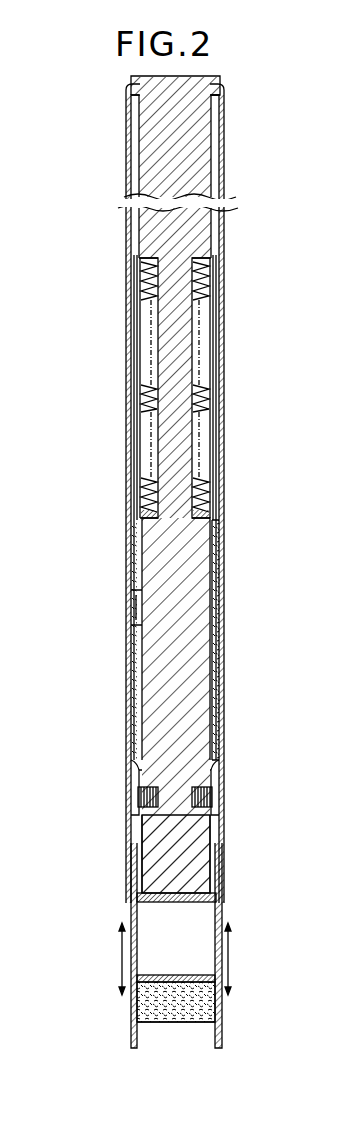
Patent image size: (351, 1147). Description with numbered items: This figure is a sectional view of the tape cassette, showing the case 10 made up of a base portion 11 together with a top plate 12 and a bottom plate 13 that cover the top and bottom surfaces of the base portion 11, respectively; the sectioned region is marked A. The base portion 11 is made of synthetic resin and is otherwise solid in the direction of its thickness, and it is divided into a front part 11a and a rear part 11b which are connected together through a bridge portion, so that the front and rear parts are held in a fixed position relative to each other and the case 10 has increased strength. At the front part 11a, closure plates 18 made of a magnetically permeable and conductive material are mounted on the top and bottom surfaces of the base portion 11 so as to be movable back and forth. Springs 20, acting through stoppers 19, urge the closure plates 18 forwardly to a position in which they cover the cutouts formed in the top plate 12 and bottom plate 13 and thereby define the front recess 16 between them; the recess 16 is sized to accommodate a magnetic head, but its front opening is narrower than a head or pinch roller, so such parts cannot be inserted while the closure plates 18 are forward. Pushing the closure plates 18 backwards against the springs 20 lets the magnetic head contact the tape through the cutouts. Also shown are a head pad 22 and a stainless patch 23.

The case 10 is at (122, 240).
The section A is at (228, 245).
The base portion 11 is at (184, 575).
The front part 11a is at (152, 856).
The rear part 11b is at (188, 156).
The top plate 12 is at (222, 291).
The bottom plate 13 is at (128, 603).
The front recess 16 is at (172, 938).
The closure plates 18 is at (221, 670).
The stoppers 19 is at (128, 437).
The springs 20 is at (128, 312).
The head pad 22 is at (217, 1008).
The stainless patch 23 is at (180, 902).